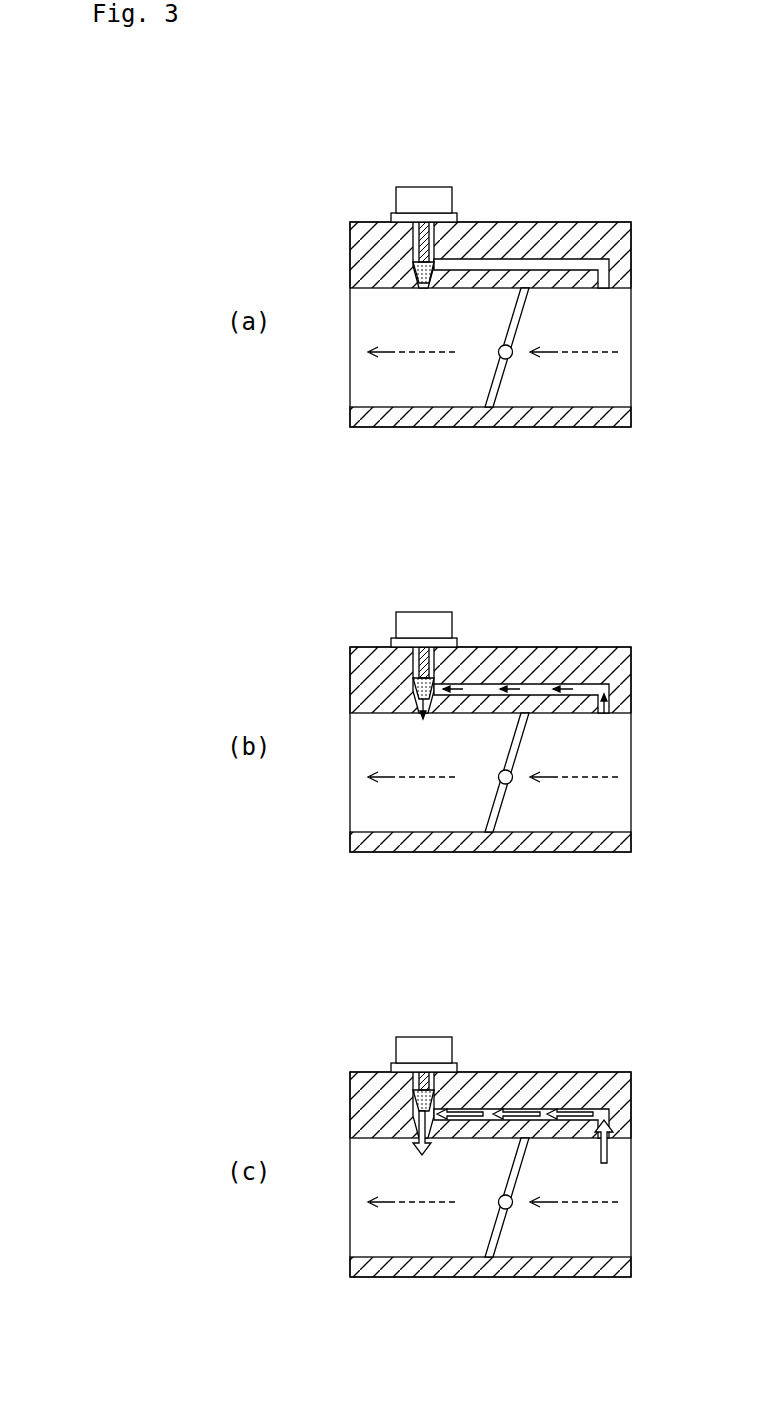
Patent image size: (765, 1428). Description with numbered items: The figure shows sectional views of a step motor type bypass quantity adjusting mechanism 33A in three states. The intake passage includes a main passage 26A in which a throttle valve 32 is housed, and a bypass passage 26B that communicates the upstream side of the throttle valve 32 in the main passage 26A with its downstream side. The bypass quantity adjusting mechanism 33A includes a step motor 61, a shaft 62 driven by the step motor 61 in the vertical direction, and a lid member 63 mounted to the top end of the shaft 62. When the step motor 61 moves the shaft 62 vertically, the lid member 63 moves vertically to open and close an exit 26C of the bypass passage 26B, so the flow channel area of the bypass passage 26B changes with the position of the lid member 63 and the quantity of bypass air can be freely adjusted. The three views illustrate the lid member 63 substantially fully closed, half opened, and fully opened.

The step motor type bypass quantity adjusting mechanism 33A is at (406, 616).
The step motor 61 is at (453, 203).
The shaft 62 is at (421, 246).
The lid member 63 is at (412, 250).
The bypass passage 26B is at (561, 265).
The exit of bypass passage 26C is at (427, 289).
The throttle valve 32 is at (521, 317).
The main passage 26A is at (567, 400).